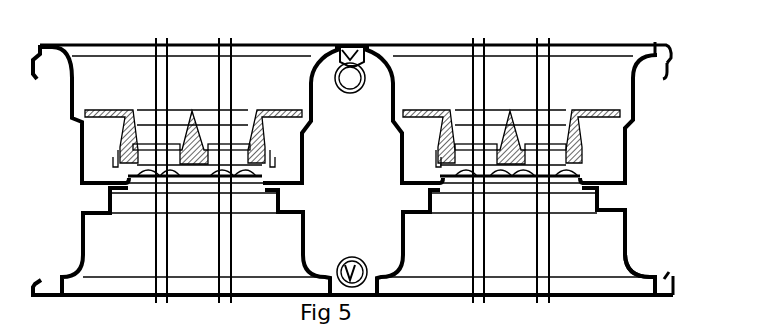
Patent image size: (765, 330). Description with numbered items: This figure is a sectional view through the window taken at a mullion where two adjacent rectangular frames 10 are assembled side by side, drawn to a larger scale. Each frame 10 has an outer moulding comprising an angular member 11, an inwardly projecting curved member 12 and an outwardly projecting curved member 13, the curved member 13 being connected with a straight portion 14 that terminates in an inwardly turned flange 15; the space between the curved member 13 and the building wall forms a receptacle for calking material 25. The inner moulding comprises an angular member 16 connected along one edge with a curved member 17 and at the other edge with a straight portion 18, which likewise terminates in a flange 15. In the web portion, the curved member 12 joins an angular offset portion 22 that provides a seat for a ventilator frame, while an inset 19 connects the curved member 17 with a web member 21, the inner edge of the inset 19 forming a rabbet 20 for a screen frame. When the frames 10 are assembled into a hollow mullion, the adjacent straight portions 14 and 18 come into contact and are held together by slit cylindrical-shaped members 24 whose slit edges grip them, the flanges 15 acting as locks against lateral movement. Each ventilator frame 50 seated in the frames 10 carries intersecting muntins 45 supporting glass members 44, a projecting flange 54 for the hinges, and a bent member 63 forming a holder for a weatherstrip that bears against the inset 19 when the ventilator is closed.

The rectangular frame 10 is at (353, 170).
The angular member 11 is at (615, 45).
The inwardly projecting curved member 12 is at (632, 73).
The outwardly projecting curved member 13 is at (669, 50).
The straight portion 14 is at (670, 63).
The inwardly turned flange 15 is at (666, 78).
The angular member 16 is at (660, 296).
The curved member 17 is at (628, 252).
The straight portion 18 is at (676, 286).
The inset 19 is at (598, 186).
The rabbet 20 is at (268, 197).
The web member 21 is at (628, 148).
The angular offset portion 22 is at (613, 127).
The cylindrical-shaped member 24 is at (346, 91).
The calking material 25 is at (352, 46).
The glass member 44 is at (146, 144).
The muntin 45 is at (192, 110).
The ventilator frame 50 is at (126, 130).
The projecting flange 54 is at (425, 110).
The member 63 is at (112, 164).